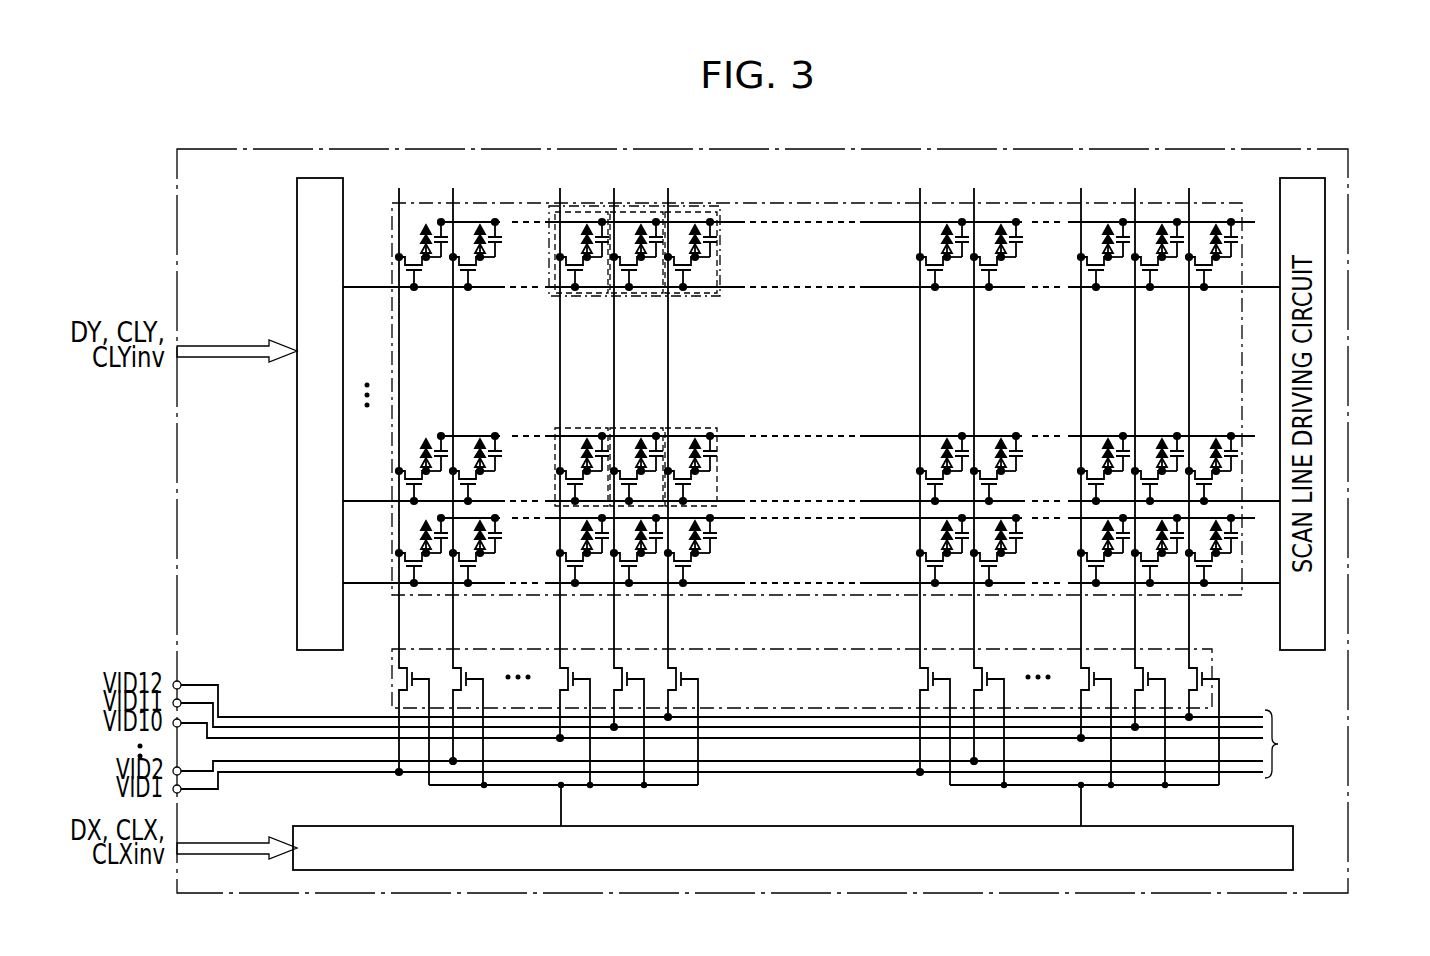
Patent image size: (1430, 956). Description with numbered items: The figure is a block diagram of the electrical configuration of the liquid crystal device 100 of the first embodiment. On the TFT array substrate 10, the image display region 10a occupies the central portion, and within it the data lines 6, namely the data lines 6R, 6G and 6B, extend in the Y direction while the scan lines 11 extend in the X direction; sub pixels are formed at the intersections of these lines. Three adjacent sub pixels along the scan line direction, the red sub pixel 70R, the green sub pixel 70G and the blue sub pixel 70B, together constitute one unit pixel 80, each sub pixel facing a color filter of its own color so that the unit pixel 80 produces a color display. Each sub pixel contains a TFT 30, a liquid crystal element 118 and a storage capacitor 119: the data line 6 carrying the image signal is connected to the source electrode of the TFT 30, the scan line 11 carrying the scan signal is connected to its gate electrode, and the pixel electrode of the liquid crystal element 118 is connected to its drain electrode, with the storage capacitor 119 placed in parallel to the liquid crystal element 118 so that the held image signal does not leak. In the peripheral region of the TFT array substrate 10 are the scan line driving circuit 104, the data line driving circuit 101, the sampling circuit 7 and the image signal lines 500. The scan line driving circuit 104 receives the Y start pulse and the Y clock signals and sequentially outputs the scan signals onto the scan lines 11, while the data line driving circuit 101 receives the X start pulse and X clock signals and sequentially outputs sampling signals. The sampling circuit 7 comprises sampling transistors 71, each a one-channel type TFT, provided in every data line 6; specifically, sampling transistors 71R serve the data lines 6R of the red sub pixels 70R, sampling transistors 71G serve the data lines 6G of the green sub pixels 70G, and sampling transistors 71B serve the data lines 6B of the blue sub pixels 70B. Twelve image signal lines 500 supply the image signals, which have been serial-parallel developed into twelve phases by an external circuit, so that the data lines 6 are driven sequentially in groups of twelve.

The liquid crystal device 100 is at (162, 127).
The TFT array substrate 10 is at (1310, 150).
The image display region 10a is at (1222, 205).
The scan line driving circuit 104 is at (297, 236).
The data line driving circuit 101 is at (1293, 843).
The unit pixel 80 is at (549, 243).
The blue sub pixel 70B is at (581, 213).
The green sub pixel 70G is at (636, 213).
The red sub pixel 70R is at (740, 358).
The data line 6B is at (560, 345).
The data line 6G is at (614, 345).
The data line 6R is at (668, 345).
The data line 6 is at (918, 336).
The scan line 11 is at (878, 500).
The liquid crystal element 118 is at (681, 438).
The storage capacitor 119 is at (715, 453).
The TFT 30 is at (695, 485).
The sampling circuit 7 is at (1205, 650).
The sampling transistor 71 is at (395, 686).
The sampling transistor 71B is at (558, 680).
The sampling transistor 71G is at (612, 680).
The sampling transistor 71R is at (666, 680).
The image signal lines 500 is at (745, 737).